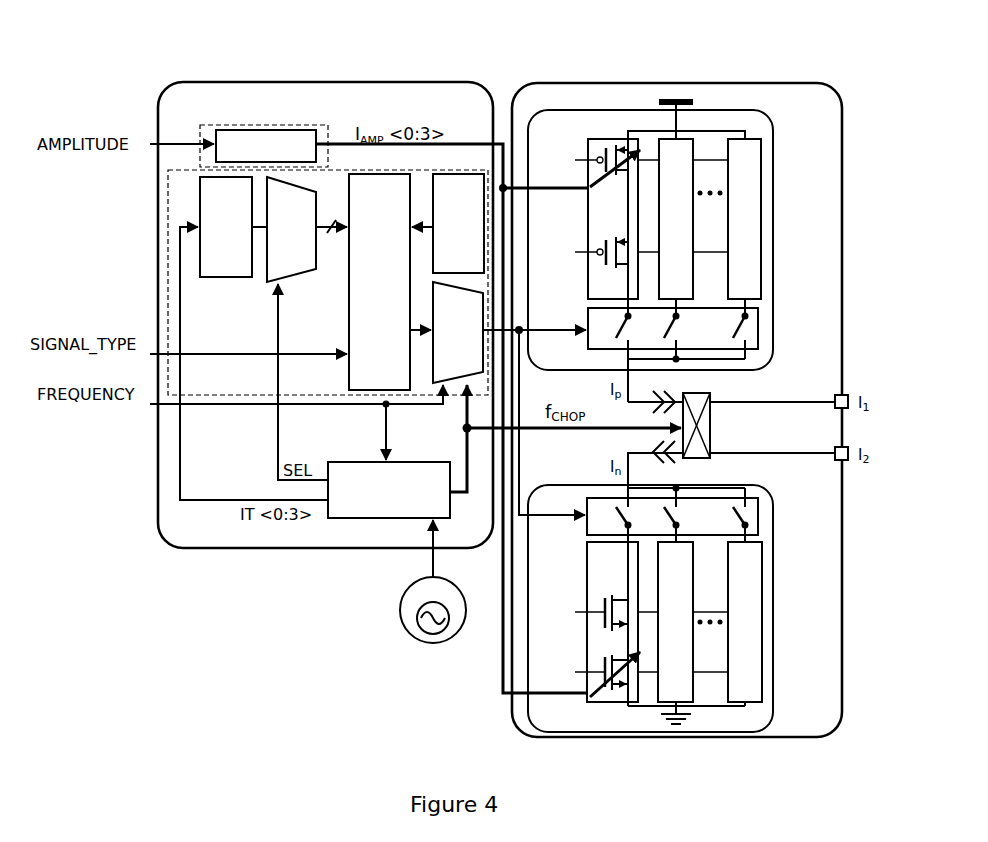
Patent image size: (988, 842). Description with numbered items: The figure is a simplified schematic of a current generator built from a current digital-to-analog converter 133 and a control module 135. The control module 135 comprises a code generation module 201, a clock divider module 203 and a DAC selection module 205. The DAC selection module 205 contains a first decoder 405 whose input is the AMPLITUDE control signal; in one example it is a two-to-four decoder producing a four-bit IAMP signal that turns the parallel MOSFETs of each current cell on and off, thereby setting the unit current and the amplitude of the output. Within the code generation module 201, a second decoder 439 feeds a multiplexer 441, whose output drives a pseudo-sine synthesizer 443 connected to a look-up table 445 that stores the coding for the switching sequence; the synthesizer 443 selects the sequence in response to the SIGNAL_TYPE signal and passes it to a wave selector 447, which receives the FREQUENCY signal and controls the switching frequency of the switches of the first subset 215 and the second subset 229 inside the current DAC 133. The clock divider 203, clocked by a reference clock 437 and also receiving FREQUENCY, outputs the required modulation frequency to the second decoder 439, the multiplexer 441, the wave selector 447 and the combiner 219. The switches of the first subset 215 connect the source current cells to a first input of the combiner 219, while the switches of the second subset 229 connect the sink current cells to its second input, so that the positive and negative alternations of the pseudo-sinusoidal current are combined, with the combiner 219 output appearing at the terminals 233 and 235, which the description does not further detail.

The control module 135 is at (410, 82).
The current digital-to-analog converter 133 is at (735, 83).
The DAC selection module 205 is at (291, 97).
The first decoder 405 is at (326, 128).
The code generation module 201 is at (166, 197).
The second decoder 439 is at (222, 280).
The multiplexer 441 is at (300, 284).
The pseudo-sine synthesizer 443 is at (349, 374).
The look-up table 445 is at (434, 192).
The wave selector 447 is at (434, 350).
The clock divider module 203 is at (353, 520).
The reference clock 437 is at (404, 632).
The first subset of switches 215 is at (694, 342).
The combiner 219 is at (700, 393).
The output terminal 233 is at (846, 395).
The output terminal 235 is at (846, 460).
The second subset of switches 229 is at (718, 514).